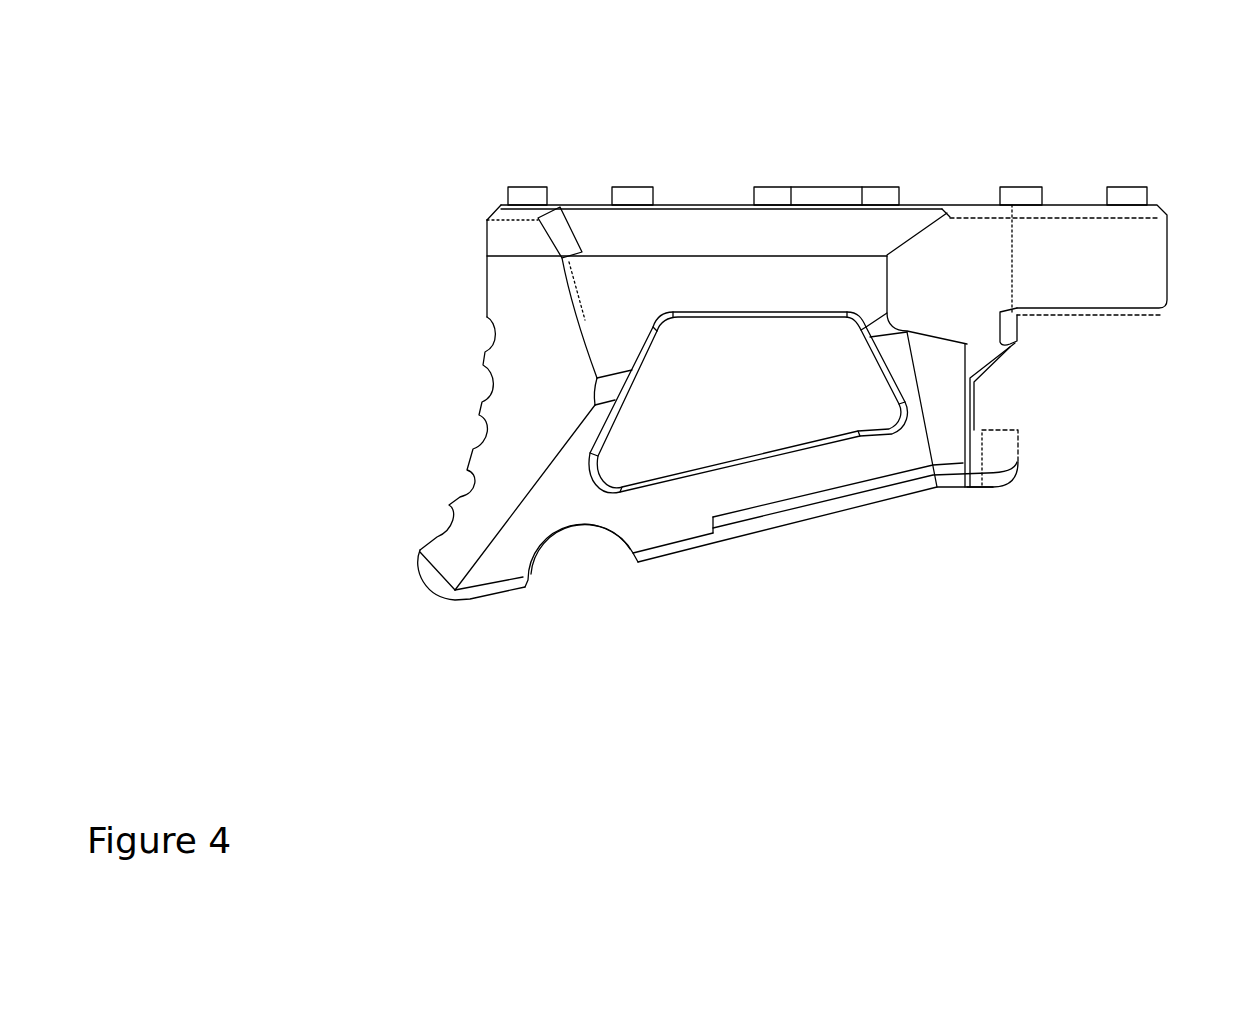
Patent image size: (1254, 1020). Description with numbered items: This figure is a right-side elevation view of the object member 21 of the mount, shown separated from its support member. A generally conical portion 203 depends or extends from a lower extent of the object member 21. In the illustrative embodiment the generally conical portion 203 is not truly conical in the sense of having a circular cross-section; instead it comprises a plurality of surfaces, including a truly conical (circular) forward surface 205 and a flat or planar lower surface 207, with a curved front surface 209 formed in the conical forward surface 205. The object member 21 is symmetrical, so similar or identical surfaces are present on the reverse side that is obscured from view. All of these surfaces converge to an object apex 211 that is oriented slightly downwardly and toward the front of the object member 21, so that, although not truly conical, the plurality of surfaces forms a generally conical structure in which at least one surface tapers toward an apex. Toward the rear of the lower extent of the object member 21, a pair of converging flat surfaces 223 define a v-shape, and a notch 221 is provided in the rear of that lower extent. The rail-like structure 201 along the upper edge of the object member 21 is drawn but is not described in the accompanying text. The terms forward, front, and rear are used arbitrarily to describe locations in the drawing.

The object member 21 is at (450, 130).
The rail mount 201 is at (1073, 205).
The generally conical portion 203 is at (438, 443).
The conical forward surface 205 is at (542, 357).
The planar lower surface 207 is at (543, 517).
The curved front surface 209 is at (460, 497).
The object apex 211 is at (440, 592).
The notch 221 is at (993, 397).
The converging flat surfaces 223 is at (938, 433).